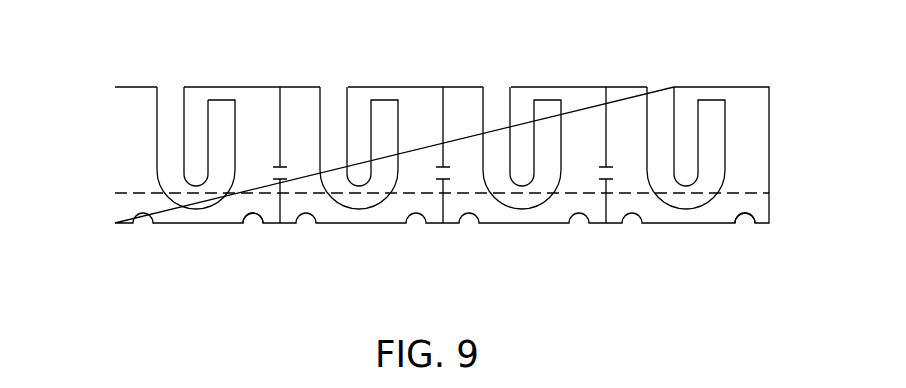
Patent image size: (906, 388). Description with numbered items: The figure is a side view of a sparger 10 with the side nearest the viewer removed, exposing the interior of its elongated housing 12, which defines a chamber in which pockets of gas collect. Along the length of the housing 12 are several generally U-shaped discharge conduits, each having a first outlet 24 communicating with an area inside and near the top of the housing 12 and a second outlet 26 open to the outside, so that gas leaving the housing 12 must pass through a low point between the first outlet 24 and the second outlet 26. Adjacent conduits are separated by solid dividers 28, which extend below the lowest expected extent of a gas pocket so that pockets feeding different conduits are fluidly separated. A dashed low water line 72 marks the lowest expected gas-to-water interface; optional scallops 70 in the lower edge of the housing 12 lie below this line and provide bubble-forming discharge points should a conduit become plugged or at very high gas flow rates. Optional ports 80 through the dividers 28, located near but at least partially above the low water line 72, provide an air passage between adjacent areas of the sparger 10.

The sparger 10 is at (410, 181).
The housing 12 is at (115, 127).
The first outlet 24 is at (186, 105).
The second outlet 26 is at (172, 91).
The divider 28 is at (278, 103).
The scallop 70 is at (255, 220).
The low water line 72 is at (746, 191).
The port 80 is at (453, 176).